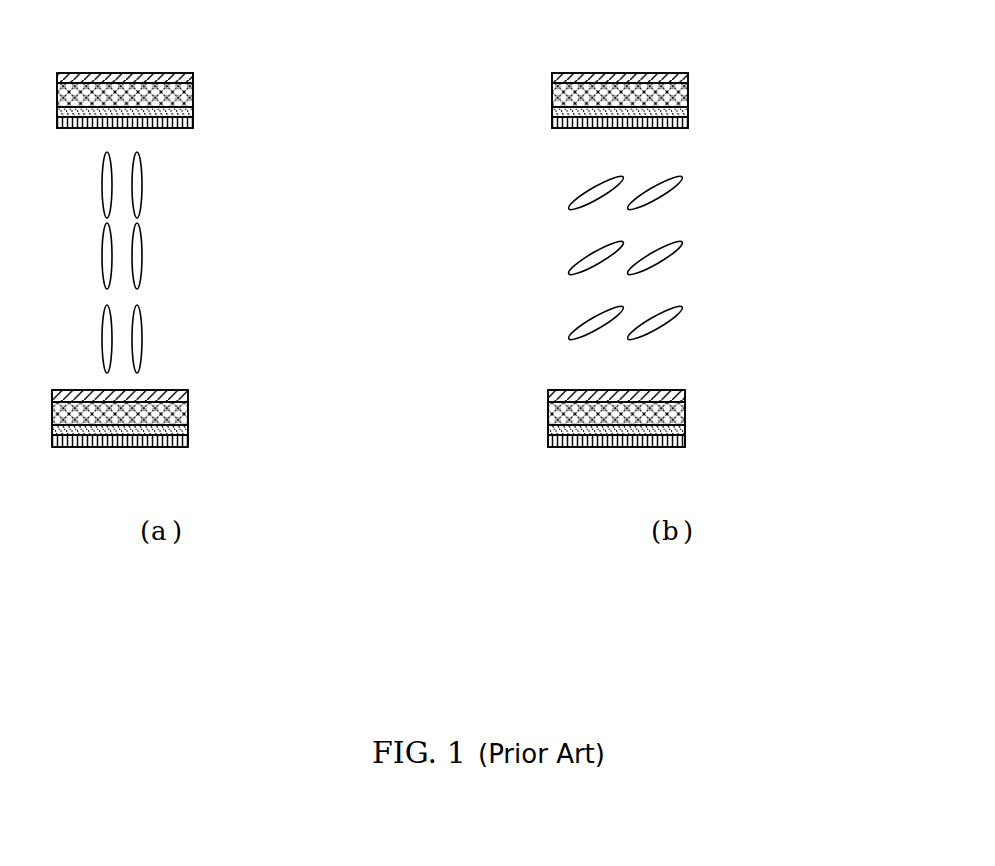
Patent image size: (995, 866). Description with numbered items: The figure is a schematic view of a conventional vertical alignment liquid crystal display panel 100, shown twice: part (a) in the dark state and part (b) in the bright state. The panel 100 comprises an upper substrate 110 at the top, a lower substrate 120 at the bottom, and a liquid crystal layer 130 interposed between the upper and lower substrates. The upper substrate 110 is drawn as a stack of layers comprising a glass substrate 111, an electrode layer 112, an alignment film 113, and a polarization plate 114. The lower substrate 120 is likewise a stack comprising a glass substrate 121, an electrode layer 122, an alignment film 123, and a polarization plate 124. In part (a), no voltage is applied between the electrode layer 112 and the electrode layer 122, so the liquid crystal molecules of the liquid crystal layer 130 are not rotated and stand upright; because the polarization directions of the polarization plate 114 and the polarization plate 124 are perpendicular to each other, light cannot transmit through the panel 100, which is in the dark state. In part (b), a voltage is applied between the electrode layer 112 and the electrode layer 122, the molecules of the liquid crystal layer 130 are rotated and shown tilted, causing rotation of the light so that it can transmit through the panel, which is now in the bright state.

The vertical alignment liquid crystal display panel 100 is at (170, 38).
The upper substrate 110 is at (297, 73).
The glass substrate 111 is at (193, 98).
The electrode layer 112 is at (193, 112).
The alignment film 113 is at (186, 128).
The polarization plate 114 is at (193, 77).
The lower substrate 120 is at (296, 390).
The glass substrate 121 is at (188, 431).
The electrode layer 122 is at (188, 417).
The alignment film 123 is at (188, 394).
The polarization plate 124 is at (181, 447).
The liquid crystal layer 130 is at (83, 162).